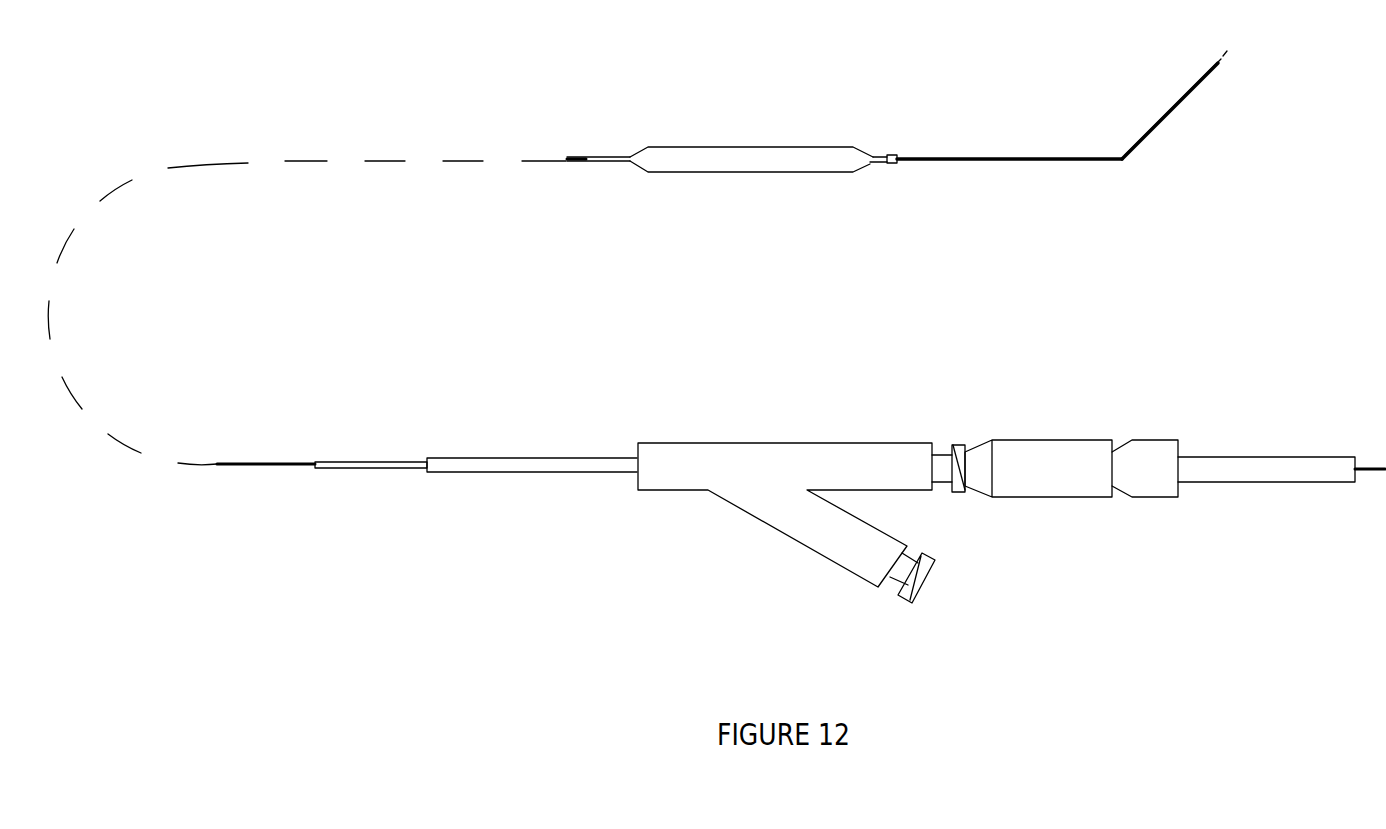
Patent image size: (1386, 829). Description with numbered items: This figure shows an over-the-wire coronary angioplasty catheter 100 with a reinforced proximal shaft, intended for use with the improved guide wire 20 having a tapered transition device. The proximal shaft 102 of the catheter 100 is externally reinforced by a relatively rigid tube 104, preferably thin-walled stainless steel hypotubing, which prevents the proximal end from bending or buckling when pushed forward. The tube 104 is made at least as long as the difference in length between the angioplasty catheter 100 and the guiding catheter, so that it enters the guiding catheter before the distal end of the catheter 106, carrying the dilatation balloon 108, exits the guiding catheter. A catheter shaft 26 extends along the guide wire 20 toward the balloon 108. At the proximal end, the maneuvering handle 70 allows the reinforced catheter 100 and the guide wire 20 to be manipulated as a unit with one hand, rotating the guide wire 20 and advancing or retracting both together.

The guide wire 20 is at (570, 158).
The catheter shaft 26 is at (897, 155).
The maneuvering handle 70 is at (1157, 440).
The coronary angioplasty catheter 100 is at (722, 450).
The proximal shaft 102 is at (395, 460).
The reinforcing tube 104 is at (520, 458).
The distal end of the catheter 106 is at (886, 163).
The dilatation balloon 108 is at (723, 155).